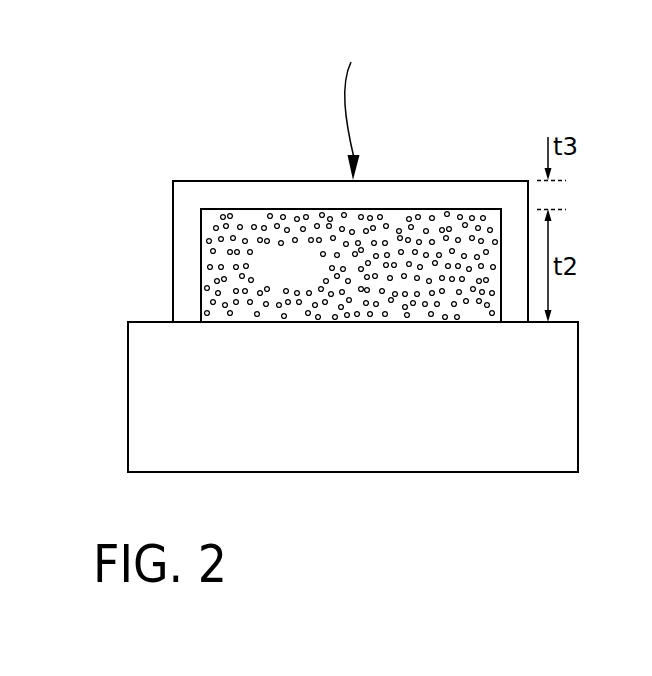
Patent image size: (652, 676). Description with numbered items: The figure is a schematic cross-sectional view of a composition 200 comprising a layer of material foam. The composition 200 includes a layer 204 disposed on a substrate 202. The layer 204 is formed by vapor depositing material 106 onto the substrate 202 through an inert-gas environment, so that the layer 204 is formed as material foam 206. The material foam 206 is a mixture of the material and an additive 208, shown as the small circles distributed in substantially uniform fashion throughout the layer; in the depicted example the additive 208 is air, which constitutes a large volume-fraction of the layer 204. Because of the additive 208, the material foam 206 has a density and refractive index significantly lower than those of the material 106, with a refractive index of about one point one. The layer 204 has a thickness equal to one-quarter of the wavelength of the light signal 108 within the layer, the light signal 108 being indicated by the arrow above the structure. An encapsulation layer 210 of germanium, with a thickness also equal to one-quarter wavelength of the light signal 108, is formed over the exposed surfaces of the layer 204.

The composition 200 is at (233, 72).
The light signal 108 is at (372, 121).
The additive 208 is at (400, 235).
The material 106 is at (435, 237).
The encapsulation layer 210 is at (187, 245).
The layer 204 is at (200, 282).
The material foam 206 is at (361, 205).
The substrate 202 is at (562, 460).